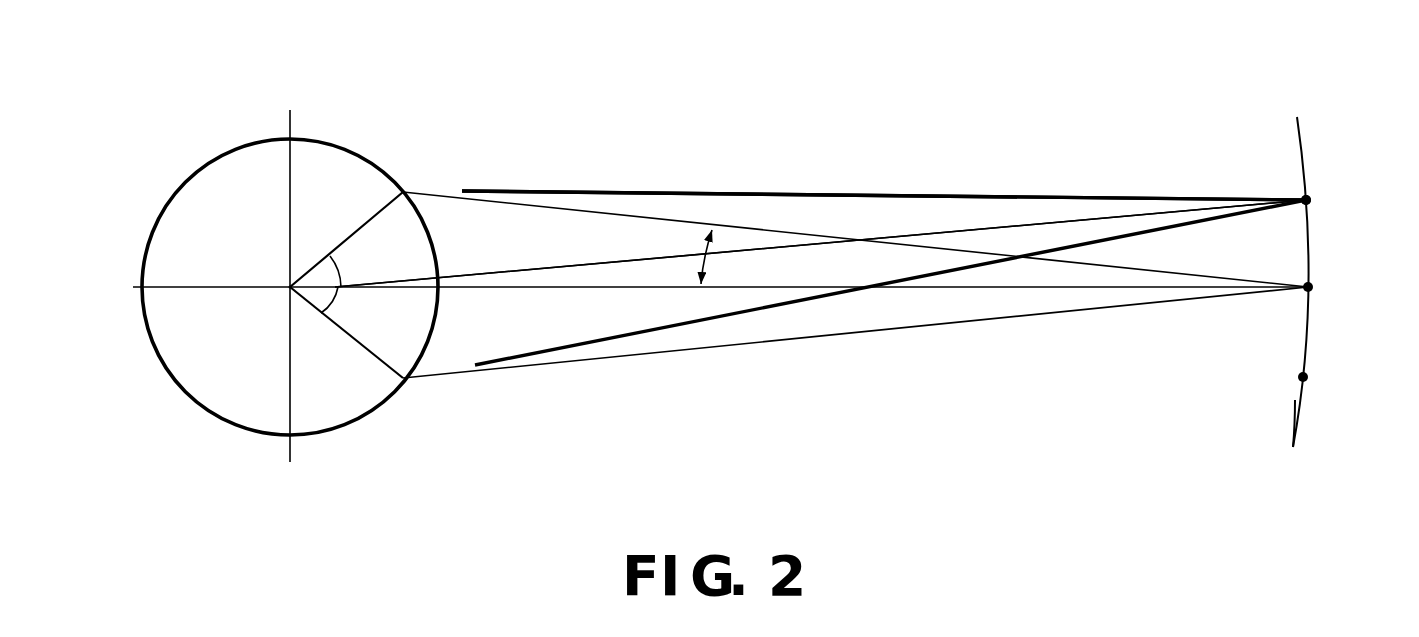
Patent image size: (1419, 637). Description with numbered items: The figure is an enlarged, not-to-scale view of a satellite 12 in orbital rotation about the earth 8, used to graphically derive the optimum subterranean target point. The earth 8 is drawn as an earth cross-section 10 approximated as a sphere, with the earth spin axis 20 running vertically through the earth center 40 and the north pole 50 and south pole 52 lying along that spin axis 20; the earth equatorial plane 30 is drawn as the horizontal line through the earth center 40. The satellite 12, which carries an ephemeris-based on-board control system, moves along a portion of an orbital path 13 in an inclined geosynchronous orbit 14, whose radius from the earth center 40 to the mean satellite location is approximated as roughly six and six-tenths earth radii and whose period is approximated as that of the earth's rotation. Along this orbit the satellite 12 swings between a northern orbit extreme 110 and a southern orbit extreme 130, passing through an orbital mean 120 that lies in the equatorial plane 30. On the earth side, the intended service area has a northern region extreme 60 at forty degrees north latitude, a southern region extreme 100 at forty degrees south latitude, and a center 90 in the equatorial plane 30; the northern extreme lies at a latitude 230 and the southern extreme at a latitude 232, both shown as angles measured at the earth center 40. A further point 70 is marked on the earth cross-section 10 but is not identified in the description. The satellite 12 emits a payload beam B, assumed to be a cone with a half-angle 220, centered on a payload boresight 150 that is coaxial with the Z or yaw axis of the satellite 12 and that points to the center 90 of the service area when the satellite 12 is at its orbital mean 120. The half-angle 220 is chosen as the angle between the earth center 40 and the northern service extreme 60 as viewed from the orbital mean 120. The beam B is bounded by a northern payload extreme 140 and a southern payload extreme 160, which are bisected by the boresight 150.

The earth 8 is at (397, 105).
The earth cross-section 10 is at (363, 415).
The earth spin axis 20 is at (293, 442).
The earth equatorial plane 30 is at (213, 288).
The earth center 40 is at (290, 287).
The north pole 50 is at (290, 138).
The south pole 52 is at (290, 433).
The northern region extreme 60 is at (405, 190).
The upper deflection point 70 is at (406, 192).
The center of the intended service area 90 is at (440, 290).
The southern region extreme 100 is at (405, 380).
The latitude of the northern region extreme 230 is at (330, 256).
The latitude of the southern region extreme 232 is at (321, 313).
The half-angle 220 is at (676, 255).
The payload beam B is at (1003, 194).
The yaw axis Z is at (1041, 224).
The payload boresight 150 is at (993, 225).
The southern payload extreme 160 is at (1201, 226).
The northern payload extreme 140 is at (1216, 190).
The orbital path 13 is at (1303, 145).
The inclined geosynchronous orbit 14 is at (1297, 450).
The satellite 12 is at (1311, 198).
The northern orbit extreme 110 is at (1319, 207).
The orbital mean 120 is at (1319, 294).
The southern orbit extreme 130 is at (1314, 384).